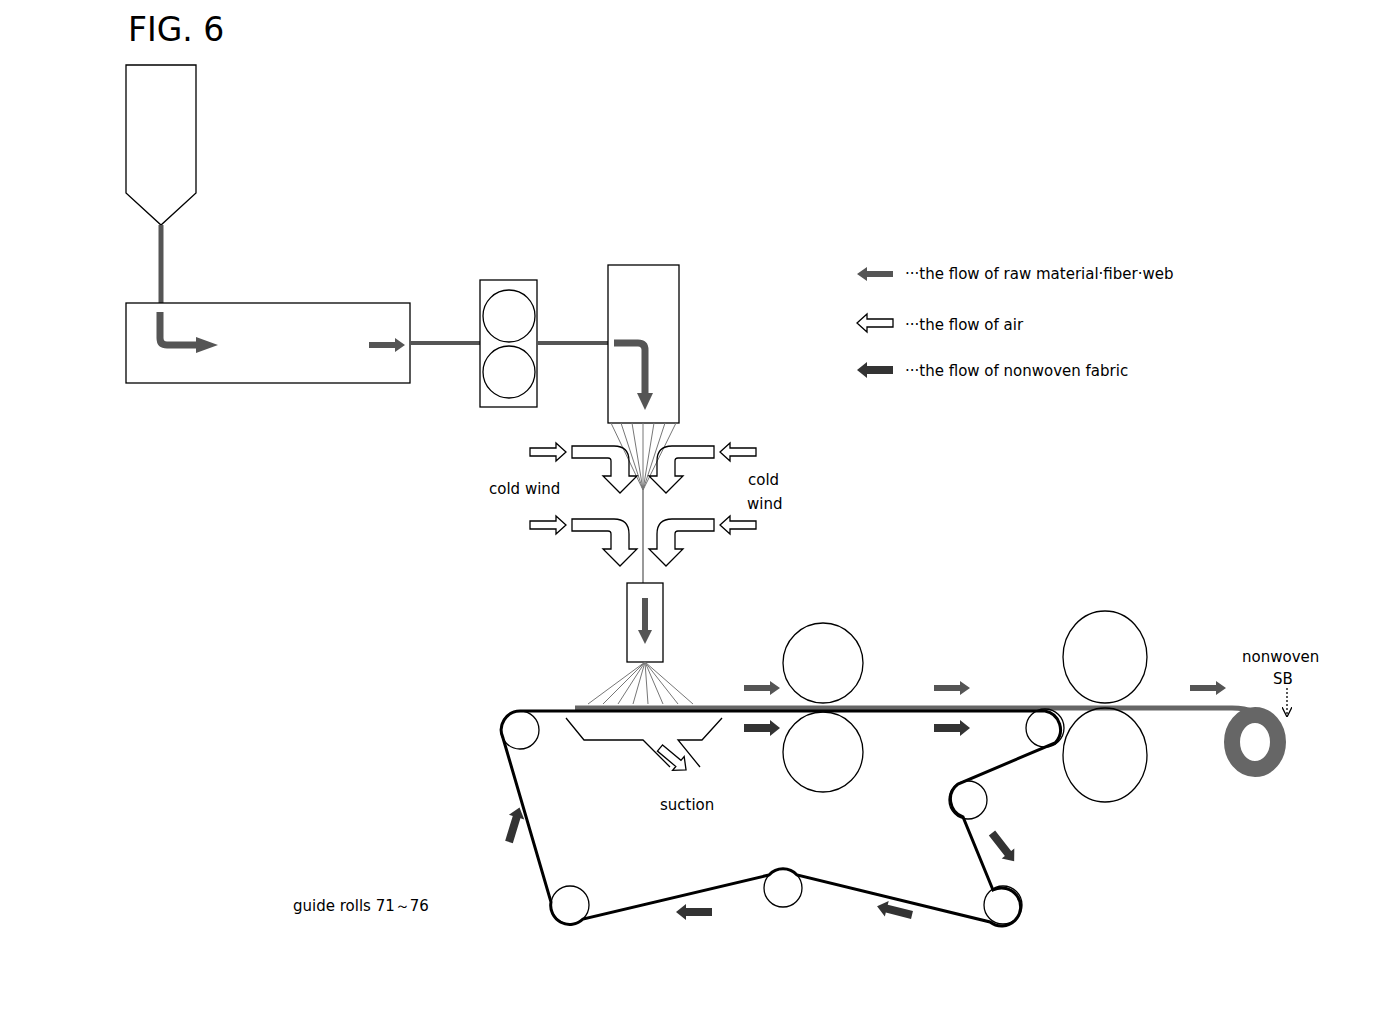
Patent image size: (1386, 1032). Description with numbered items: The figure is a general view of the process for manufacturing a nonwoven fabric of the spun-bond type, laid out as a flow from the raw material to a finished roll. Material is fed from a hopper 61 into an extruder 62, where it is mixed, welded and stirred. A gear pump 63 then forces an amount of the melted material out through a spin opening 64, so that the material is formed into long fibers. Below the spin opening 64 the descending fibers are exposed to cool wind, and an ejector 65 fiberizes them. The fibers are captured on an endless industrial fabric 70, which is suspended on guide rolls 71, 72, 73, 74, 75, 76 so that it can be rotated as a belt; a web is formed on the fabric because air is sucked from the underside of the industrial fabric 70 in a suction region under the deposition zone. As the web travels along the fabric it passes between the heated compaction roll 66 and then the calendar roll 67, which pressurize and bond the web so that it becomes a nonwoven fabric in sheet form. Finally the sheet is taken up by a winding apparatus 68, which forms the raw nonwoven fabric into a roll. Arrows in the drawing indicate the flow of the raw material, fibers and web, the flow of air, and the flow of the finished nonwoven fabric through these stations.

The hopper 61 is at (211, 184).
The extruder 62 is at (303, 329).
The gear pump 63 is at (526, 329).
The spin opening 64 is at (700, 424).
The ejector 65 is at (618, 643).
The compaction roll 66 is at (920, 606).
The calendar roll 67 is at (1212, 616).
The winding apparatus 68 is at (1255, 790).
The industrial fabric 70 is at (541, 702).
The guide roll 71 is at (498, 730).
The guide roll 72 is at (1027, 728).
The guide roll 73 is at (982, 800).
The guide roll 74 is at (1017, 905).
The guide roll 75 is at (783, 903).
The guide roll 76 is at (556, 912).